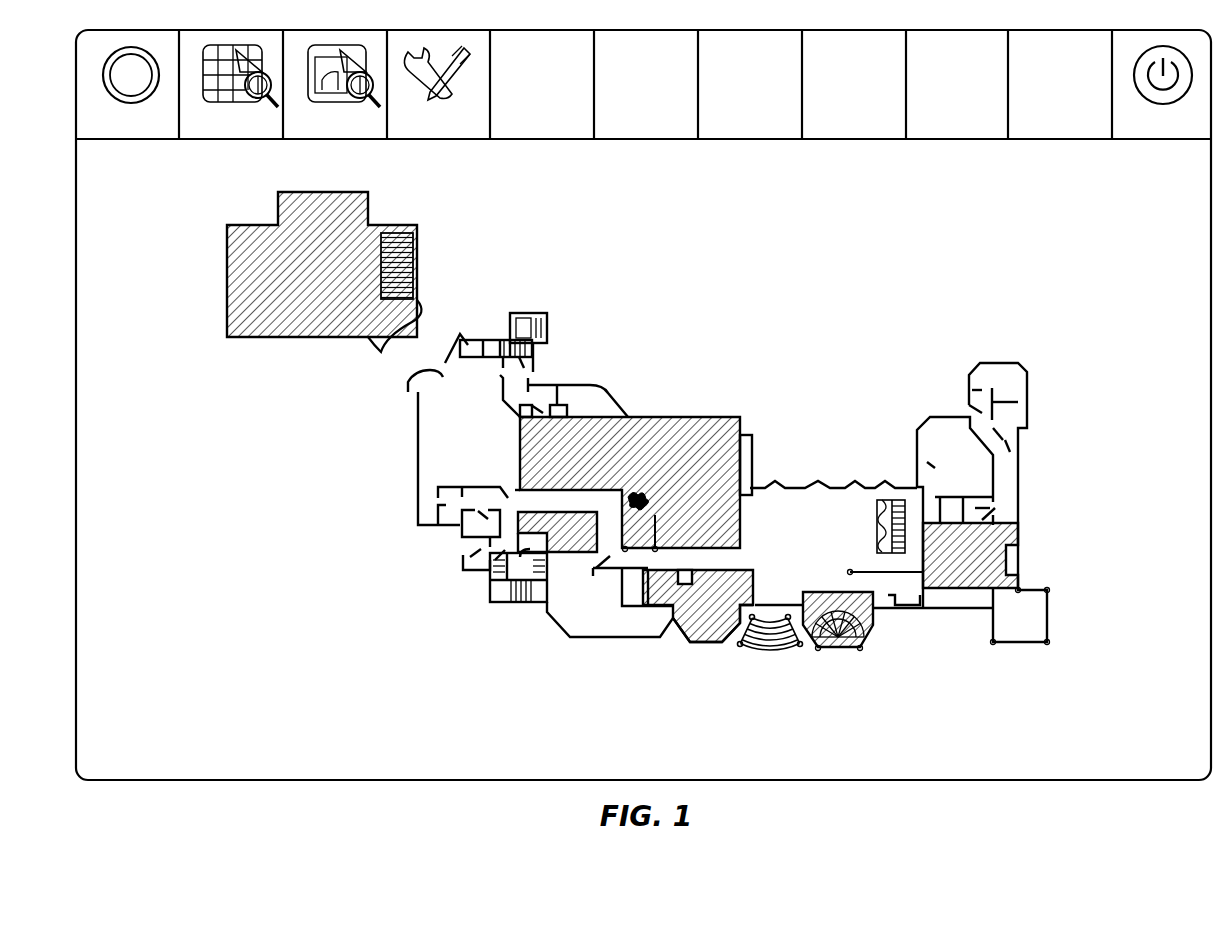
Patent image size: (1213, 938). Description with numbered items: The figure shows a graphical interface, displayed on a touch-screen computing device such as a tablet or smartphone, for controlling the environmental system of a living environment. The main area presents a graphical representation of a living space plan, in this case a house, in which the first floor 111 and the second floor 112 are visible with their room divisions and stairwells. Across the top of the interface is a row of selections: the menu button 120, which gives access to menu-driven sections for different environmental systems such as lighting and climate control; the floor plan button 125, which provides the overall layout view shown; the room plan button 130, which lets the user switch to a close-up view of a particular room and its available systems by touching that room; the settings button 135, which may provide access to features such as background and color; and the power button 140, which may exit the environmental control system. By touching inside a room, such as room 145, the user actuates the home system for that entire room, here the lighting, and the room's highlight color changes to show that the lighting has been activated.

The first floor 111 is at (567, 385).
The second floor 112 is at (418, 234).
The menu button 120 is at (96, 140).
The floor plan button 125 is at (231, 141).
The room plan button 130 is at (339, 141).
The settings button 135 is at (481, 141).
The power button 140 is at (1123, 141).
The room 145 is at (687, 433).